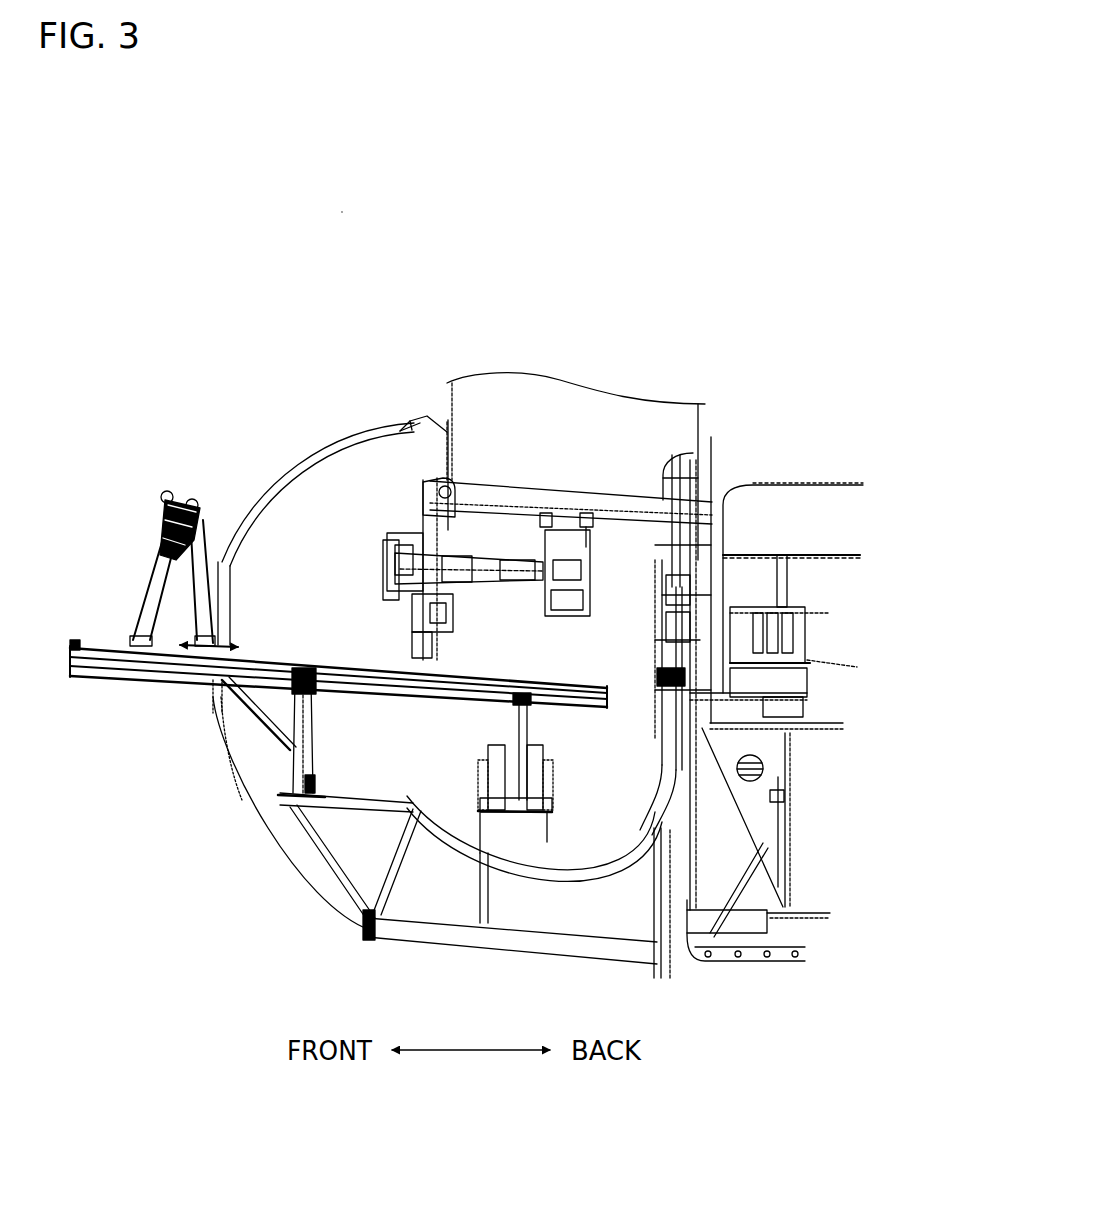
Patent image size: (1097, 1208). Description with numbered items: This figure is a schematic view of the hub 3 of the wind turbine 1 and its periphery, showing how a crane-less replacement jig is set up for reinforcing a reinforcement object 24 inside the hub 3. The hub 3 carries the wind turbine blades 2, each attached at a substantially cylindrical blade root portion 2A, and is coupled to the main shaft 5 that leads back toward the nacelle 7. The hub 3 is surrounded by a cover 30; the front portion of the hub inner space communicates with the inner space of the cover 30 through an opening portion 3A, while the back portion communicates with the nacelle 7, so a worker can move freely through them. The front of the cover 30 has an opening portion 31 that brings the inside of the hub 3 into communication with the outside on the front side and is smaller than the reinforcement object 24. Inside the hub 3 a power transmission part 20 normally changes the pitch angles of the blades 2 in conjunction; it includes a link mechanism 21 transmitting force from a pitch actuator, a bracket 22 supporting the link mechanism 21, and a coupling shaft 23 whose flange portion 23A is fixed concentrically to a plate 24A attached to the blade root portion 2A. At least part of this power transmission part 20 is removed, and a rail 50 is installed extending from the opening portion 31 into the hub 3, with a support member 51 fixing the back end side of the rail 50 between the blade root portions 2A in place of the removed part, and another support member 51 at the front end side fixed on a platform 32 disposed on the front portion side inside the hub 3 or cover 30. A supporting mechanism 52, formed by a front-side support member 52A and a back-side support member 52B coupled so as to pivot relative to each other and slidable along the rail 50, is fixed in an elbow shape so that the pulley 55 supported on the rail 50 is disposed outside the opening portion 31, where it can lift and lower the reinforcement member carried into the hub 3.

The wind turbine 1 is at (342, 212).
The wind turbine blade 2 is at (539, 641).
The blade root portion 2A is at (466, 404).
The hub 3 is at (413, 516).
The opening portion 3A is at (405, 650).
The main shaft 5 is at (722, 632).
The nacelle 7 is at (772, 500).
The power transmission part 20 is at (513, 683).
The link mechanism 21 is at (518, 575).
The bracket 22 is at (545, 785).
The coupling shaft 23 is at (552, 553).
The flange portion 23A is at (588, 527).
The reinforcement object 24 is at (652, 569).
The plate 24A is at (657, 533).
The cover 30 is at (353, 432).
The opening portion 31 is at (210, 700).
The platform 32 is at (366, 796).
The rail 50 is at (103, 672).
The support member 51 is at (311, 705).
The supporting mechanism 52 is at (157, 550).
The front-side support member 52A is at (148, 570).
The back-side support member 52B is at (215, 546).
The pulley 55 is at (160, 490).